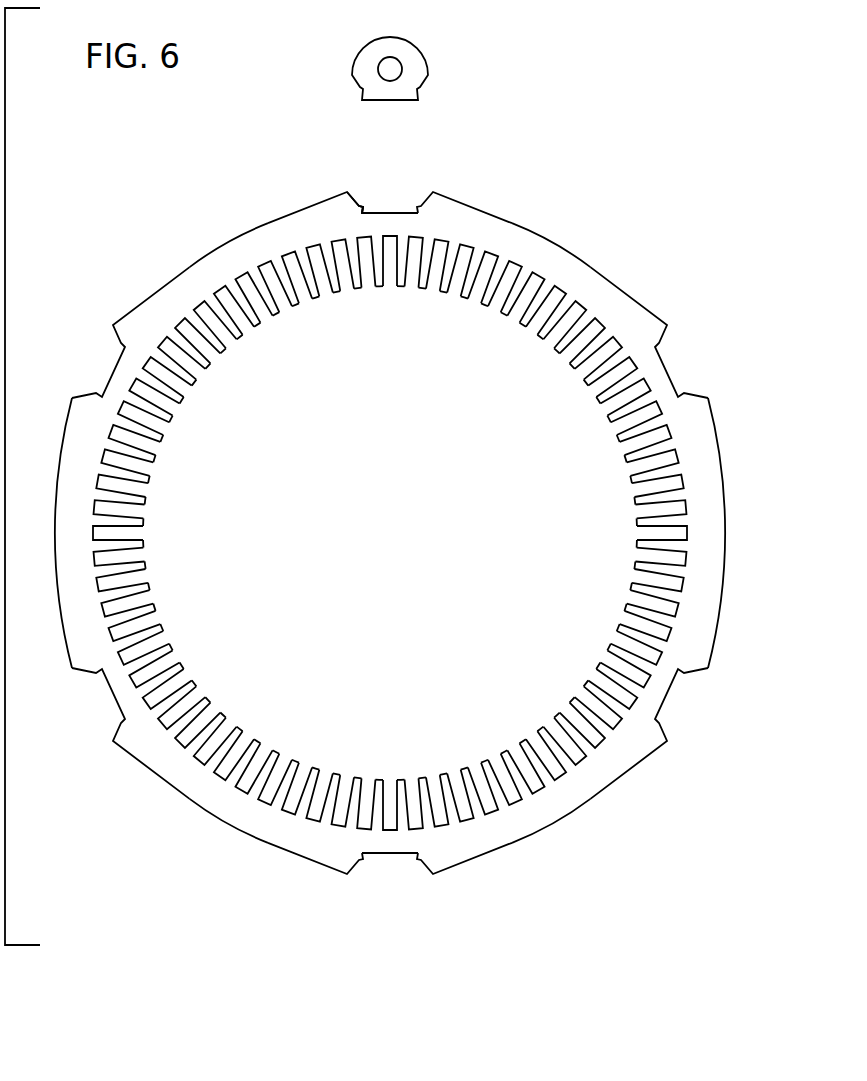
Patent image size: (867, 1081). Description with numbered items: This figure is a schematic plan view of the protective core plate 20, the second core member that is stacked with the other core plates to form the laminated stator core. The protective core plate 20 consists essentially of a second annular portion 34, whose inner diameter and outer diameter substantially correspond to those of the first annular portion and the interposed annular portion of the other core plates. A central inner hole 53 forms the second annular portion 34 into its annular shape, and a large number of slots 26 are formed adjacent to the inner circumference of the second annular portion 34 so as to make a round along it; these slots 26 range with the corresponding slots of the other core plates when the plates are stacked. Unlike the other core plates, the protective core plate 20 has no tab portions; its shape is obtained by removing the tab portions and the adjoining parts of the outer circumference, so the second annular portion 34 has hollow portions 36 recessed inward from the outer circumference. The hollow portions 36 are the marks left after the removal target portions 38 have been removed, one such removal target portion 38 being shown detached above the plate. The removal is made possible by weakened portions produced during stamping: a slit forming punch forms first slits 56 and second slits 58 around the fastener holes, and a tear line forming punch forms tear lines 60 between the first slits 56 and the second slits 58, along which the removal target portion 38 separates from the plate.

The protective core plate 20 is at (547, 230).
The slots 26 is at (483, 260).
The second annular portion 34 is at (602, 290).
The hollow portions 36 is at (408, 208).
The removal target portions 38 is at (409, 58).
The inner holes 53 is at (582, 383).
The first slits 56 is at (361, 207).
The second slits 58 is at (391, 213).
The tear lines 60 is at (360, 213).